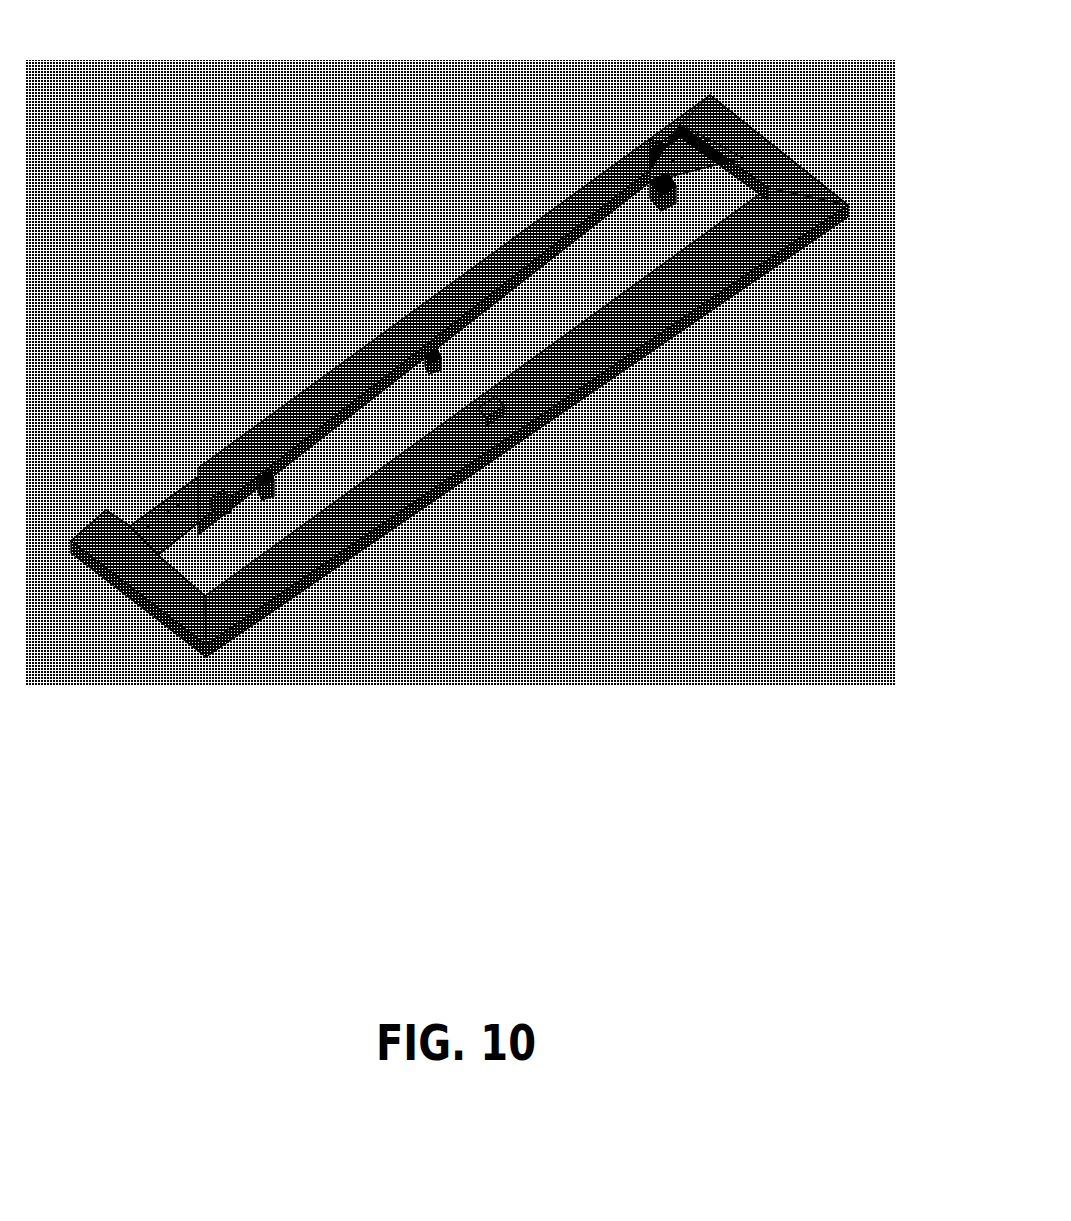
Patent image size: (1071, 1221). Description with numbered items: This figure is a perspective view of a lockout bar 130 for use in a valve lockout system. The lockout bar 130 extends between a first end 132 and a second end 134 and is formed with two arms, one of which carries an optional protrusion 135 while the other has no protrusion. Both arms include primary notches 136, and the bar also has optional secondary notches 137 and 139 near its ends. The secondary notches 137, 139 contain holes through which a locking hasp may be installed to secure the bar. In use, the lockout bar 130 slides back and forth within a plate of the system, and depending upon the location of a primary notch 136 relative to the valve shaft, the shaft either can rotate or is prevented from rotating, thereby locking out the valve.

The lockout bar 130 is at (398, 590).
The first end 132 is at (165, 593).
The second end 134 is at (782, 162).
The protrusion 135 is at (258, 488).
The primary notches 136 is at (397, 372).
The secondary notch 137 is at (200, 465).
The secondary notch 139 is at (642, 180).